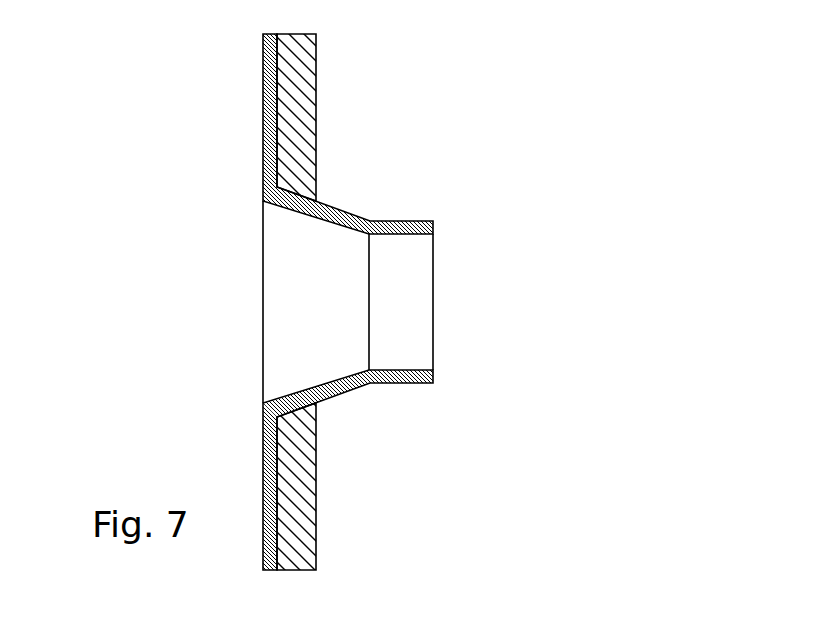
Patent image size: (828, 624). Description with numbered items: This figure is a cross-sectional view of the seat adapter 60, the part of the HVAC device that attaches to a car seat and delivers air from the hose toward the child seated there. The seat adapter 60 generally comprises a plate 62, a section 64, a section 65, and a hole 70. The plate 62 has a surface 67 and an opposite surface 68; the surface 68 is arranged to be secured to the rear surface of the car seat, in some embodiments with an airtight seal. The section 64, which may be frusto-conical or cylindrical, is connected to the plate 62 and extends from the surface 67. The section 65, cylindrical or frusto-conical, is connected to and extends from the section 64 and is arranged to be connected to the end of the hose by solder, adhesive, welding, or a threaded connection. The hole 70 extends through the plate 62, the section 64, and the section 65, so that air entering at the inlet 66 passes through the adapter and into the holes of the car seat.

The seat adapter 60 is at (574, 85).
The plate 62 is at (316, 465).
The section 64 is at (343, 395).
The section 65 is at (405, 220).
The inlet 66 is at (458, 304).
The surface 67 is at (316, 97).
The surface 68 is at (263, 85).
The hole 70 is at (234, 267).